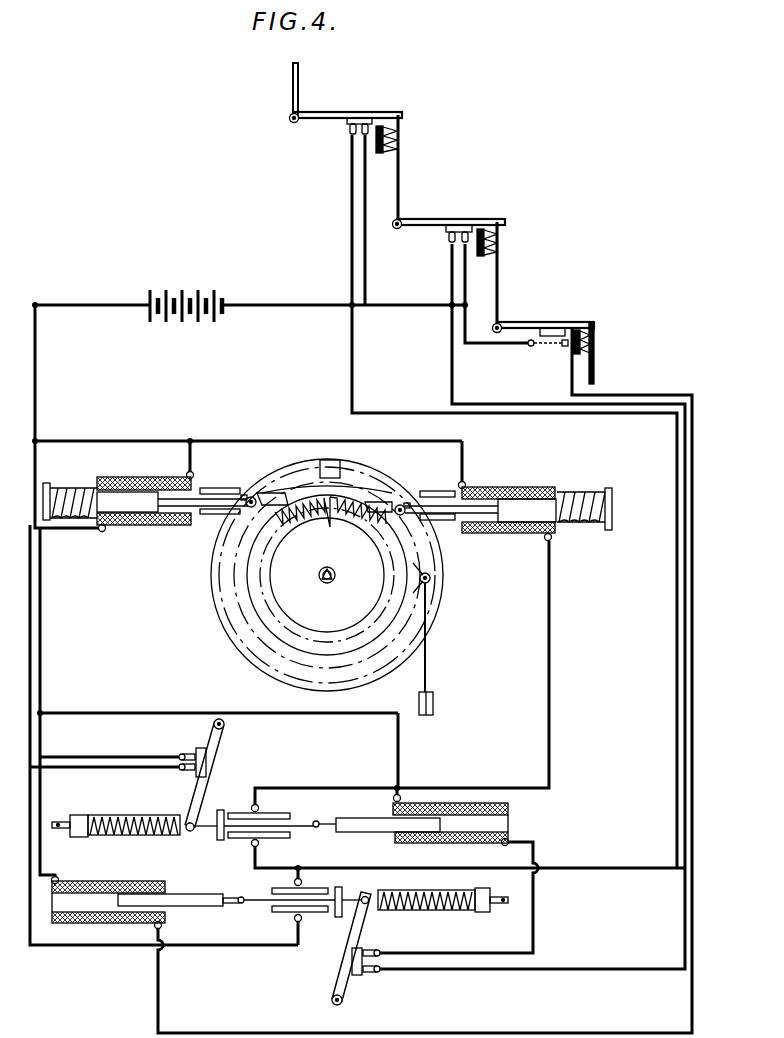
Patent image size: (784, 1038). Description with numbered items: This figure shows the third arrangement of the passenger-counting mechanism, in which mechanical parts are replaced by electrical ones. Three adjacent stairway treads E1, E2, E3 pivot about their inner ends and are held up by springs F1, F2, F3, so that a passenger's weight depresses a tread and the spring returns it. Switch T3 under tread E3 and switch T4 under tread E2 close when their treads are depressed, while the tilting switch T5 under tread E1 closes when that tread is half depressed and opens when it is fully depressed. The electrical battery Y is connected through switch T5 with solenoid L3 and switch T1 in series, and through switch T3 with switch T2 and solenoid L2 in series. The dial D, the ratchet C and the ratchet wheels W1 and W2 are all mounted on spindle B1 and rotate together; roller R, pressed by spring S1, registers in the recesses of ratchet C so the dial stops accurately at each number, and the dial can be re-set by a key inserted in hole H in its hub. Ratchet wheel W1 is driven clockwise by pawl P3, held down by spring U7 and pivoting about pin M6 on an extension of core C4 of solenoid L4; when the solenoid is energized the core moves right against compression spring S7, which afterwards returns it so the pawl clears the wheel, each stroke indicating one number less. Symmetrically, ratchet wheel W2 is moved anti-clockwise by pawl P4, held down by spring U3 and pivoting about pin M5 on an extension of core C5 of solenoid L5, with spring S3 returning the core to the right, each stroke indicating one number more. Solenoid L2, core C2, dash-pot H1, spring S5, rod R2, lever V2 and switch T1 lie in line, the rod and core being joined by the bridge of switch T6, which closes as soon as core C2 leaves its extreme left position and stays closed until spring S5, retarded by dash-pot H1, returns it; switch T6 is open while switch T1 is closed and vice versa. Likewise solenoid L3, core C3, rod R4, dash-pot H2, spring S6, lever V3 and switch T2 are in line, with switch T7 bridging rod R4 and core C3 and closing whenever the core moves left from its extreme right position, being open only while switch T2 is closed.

The tread E3 is at (312, 113).
The switch T3 is at (347, 123).
The spring F3 is at (392, 137).
The tread E2 is at (414, 218).
The switch T4 is at (447, 233).
The spring F2 is at (495, 247).
The tread E1 is at (510, 322).
The tilting switch T5 is at (531, 348).
The spring F1 is at (597, 347).
The electrical battery Y is at (190, 293).
The spring S7 is at (62, 494).
The core C4 is at (132, 505).
The solenoid L4 is at (150, 525).
The core C3 is at (216, 487).
The pin M6 is at (247, 505).
The spring U7 is at (253, 495).
The pawl P3 is at (275, 492).
The dial D is at (340, 472).
The pawl P4 is at (385, 502).
The spring U3 is at (403, 504).
The spring S3 is at (587, 492).
The pin M5 is at (435, 520).
The solenoid L5 is at (472, 533).
The core C5 is at (531, 512).
The ratchet wheel W1 is at (318, 518).
The ratchet wheel W2 is at (345, 520).
The spindle B1 is at (318, 581).
The hole H is at (336, 581).
The ratchet C is at (431, 578).
The roller R is at (430, 589).
The spring S1 is at (430, 665).
The switch T1 is at (186, 748).
The lever V2 is at (215, 769).
The dash-pot H1 is at (74, 814).
The spring S5 is at (128, 815).
The switch T6 is at (226, 809).
The rod R2 is at (212, 829).
The core C2 is at (346, 818).
The solenoid L2 is at (485, 803).
The solenoid L3 is at (76, 914).
The switch T7 is at (333, 916).
The rod R4 is at (365, 897).
The lever V3 is at (345, 950).
The switch T2 is at (366, 975).
The spring S6 is at (438, 910).
The dash-pot H2 is at (481, 912).